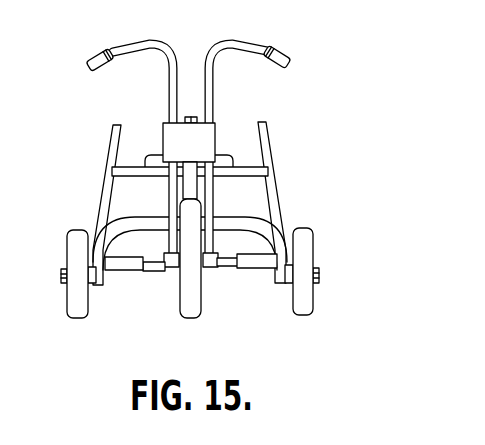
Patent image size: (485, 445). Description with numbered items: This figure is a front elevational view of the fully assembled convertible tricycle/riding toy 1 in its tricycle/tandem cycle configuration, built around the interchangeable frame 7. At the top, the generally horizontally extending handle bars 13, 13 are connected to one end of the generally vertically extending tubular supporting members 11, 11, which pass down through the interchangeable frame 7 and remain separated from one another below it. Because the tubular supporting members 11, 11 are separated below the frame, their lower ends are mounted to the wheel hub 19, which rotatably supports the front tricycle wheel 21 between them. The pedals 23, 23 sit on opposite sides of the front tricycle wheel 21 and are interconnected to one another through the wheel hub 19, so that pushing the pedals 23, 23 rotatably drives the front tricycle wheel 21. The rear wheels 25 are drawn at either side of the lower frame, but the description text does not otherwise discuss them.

The convertible tricycle/riding toy 1 is at (316, 56).
The interchangeable frame 7 is at (290, 154).
The vertically extending tubular supporting members 11 is at (168, 189).
The handle bars 13 is at (137, 52).
The wheel hub 19 is at (175, 288).
The front tricycle wheel 21 is at (183, 320).
The pedals 23 is at (128, 272).
The rear wheels 25 is at (70, 317).